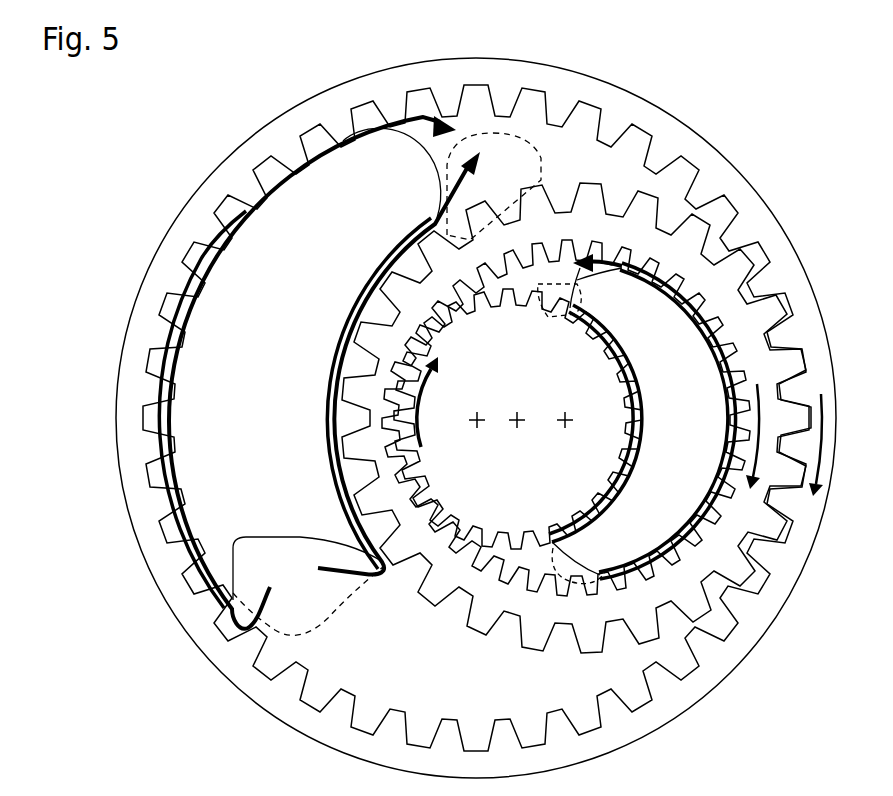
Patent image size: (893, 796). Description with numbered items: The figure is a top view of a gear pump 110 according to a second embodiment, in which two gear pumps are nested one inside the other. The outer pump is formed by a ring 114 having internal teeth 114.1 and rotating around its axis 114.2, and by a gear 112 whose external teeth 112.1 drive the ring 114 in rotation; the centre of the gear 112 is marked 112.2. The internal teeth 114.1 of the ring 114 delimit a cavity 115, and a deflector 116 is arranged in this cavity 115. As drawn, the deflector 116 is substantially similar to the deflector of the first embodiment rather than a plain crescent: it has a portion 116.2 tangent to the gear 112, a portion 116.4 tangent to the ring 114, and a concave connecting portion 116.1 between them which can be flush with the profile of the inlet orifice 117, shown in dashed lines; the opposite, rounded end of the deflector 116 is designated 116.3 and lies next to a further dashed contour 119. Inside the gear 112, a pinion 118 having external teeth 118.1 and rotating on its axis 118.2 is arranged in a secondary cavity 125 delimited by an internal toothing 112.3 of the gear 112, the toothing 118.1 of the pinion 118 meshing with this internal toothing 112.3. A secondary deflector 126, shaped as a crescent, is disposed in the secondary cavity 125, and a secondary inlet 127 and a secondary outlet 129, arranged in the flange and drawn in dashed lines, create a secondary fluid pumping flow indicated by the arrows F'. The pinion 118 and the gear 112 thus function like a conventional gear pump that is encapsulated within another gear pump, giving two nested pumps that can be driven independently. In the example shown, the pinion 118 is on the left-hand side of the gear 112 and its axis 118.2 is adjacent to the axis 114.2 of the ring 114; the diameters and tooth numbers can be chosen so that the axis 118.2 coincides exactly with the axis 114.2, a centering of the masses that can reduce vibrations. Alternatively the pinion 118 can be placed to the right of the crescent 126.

The pump 110 is at (110, 210).
The gear 112 is at (527, 619).
The external teeth 112.1 is at (671, 185).
The axis of ring gear 112.2 is at (566, 423).
The internal toothing 112.3 is at (540, 270).
The ring 114 is at (118, 390).
The internal teeth 114.1 is at (632, 157).
The axis 114.2 is at (476, 423).
The cavity 115 is at (408, 664).
The deflector 116 is at (275, 364).
The concave connecting portion 116.1 is at (233, 546).
The portion tangent to the gear 116.2 is at (330, 441).
The upper end of crescent 116.3 is at (413, 160).
The portion tangent to the ring 116.4 is at (172, 411).
The inlet orifice 117 is at (321, 597).
The pinion 118 is at (537, 512).
The external teeth 118.1 is at (506, 312).
The axis 118.2 is at (525, 407).
The outlet pocket 119 is at (536, 182).
The secondary cavity 125 is at (539, 580).
The secondary deflector 126 is at (710, 444).
The secondary inlet 127 is at (573, 570).
The secondary outlet 129 is at (572, 298).